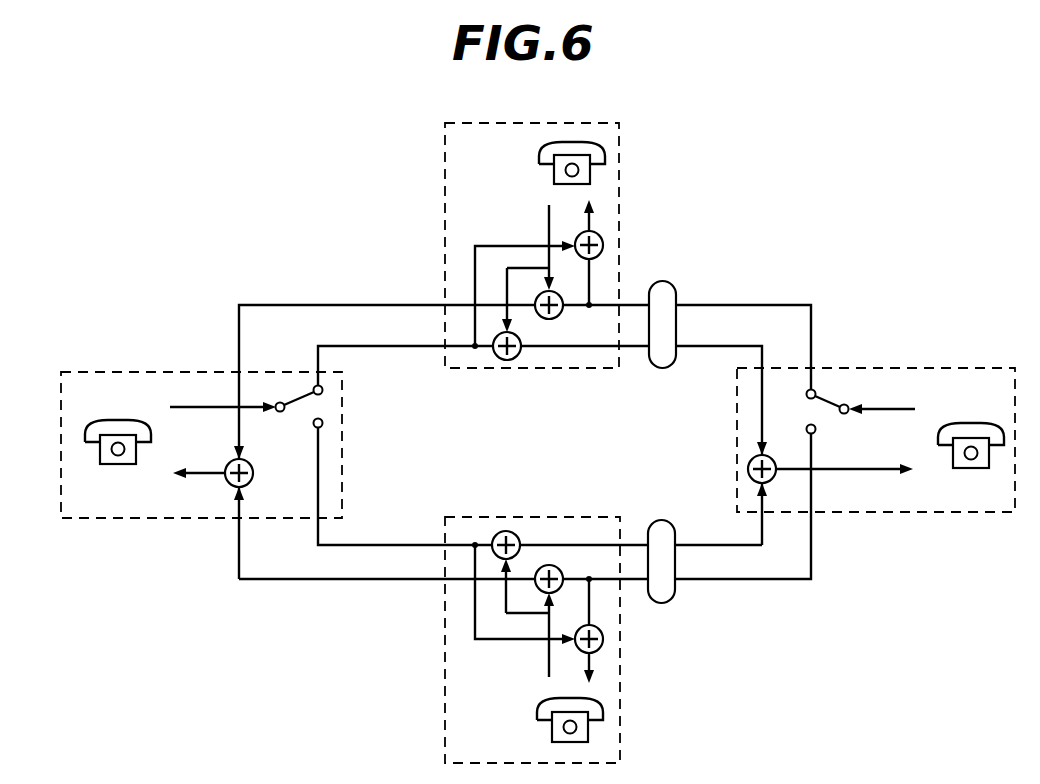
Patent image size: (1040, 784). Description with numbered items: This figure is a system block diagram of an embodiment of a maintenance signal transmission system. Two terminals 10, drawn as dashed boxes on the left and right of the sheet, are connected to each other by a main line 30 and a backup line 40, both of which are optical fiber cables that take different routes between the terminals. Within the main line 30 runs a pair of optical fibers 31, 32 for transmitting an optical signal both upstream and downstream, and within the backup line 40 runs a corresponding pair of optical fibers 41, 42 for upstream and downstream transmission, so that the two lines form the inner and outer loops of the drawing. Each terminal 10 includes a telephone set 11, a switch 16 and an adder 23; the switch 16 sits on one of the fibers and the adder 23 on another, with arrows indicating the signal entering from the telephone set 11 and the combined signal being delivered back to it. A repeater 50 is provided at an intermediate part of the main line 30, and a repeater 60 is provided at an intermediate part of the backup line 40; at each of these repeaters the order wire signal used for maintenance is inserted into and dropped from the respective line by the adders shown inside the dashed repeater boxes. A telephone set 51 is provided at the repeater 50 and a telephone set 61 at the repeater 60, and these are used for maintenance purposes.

The terminal 10 is at (115, 367).
The telephone set 11 is at (95, 463).
The switch 16 is at (295, 395).
The adder 23 is at (232, 488).
The main line 30 is at (662, 278).
The optical fiber 31 is at (410, 347).
The optical fiber 32 is at (355, 303).
The backup line 40 is at (668, 605).
The optical fiber 41 is at (405, 542).
The optical fiber 42 is at (372, 582).
The repeater 50 is at (444, 184).
The telephone set 51 is at (603, 175).
The repeater 60 is at (445, 712).
The telephone set 61 is at (595, 732).